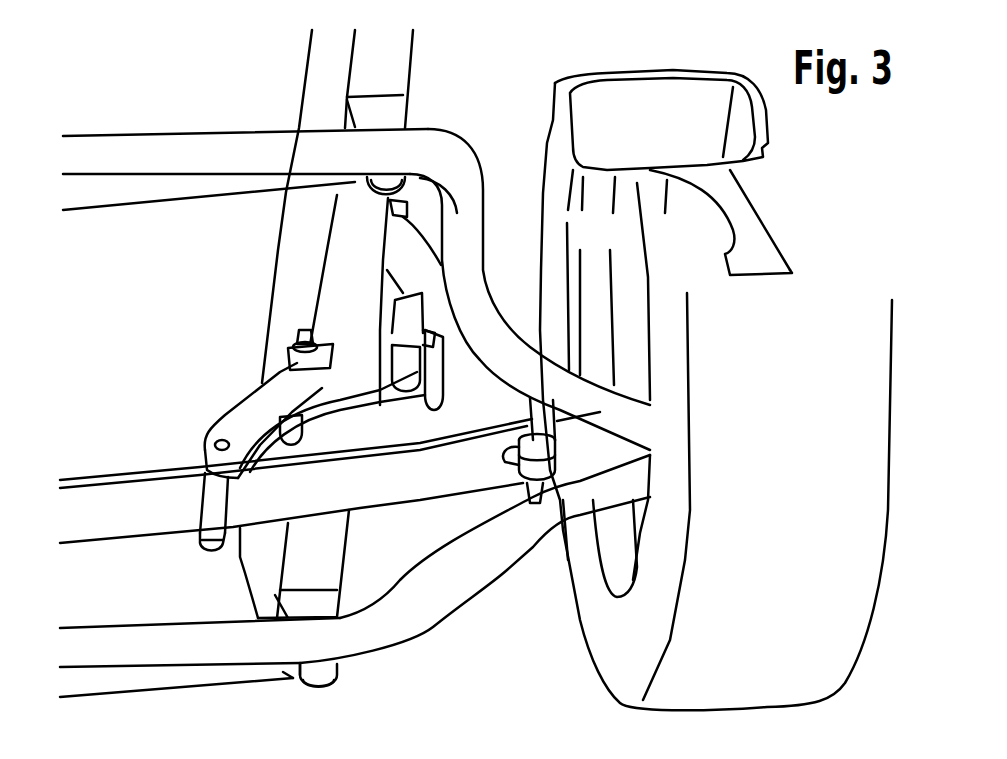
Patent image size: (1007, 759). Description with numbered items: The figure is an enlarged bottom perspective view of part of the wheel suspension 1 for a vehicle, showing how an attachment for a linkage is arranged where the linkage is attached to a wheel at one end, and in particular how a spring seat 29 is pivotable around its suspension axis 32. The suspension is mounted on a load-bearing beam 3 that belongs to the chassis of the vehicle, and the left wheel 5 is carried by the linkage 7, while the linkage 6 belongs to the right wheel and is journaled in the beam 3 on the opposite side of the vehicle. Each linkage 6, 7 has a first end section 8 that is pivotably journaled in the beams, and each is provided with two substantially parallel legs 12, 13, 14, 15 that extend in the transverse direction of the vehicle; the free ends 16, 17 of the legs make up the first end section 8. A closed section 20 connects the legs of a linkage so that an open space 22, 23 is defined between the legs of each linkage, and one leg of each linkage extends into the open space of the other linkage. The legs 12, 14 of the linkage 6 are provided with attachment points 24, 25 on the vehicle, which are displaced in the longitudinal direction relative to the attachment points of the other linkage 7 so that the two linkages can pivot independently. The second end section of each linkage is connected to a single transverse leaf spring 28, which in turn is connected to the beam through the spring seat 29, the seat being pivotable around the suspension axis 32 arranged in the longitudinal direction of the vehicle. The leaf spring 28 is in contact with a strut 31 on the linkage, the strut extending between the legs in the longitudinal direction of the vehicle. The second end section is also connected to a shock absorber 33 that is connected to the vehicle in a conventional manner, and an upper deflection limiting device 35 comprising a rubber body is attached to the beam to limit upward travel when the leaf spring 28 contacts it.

The wheel suspension 1 is at (100, 85).
The load-bearing beam 3 is at (316, 84).
The left wheel 5 is at (604, 652).
The linkage 6 is at (124, 205).
The linkage 7 is at (117, 147).
The first end section 8 is at (358, 190).
The leg 12 is at (110, 680).
The leg 13 is at (187, 637).
The leg 14 is at (186, 190).
The leg 15 is at (198, 152).
The free end 16 is at (291, 683).
The free end 17 is at (350, 195).
The closed section 20 is at (462, 607).
The open space 22 is at (81, 341).
The open space 23 is at (136, 341).
The attachment point 24 is at (333, 687).
The attachment point 25 is at (340, 237).
The leaf spring 28 is at (115, 493).
The spring seat 29 is at (250, 407).
The strut 31 is at (533, 505).
The suspension axis 32 is at (300, 343).
The shock absorber 33 is at (420, 253).
The upper deflection limiting device 35 is at (437, 417).